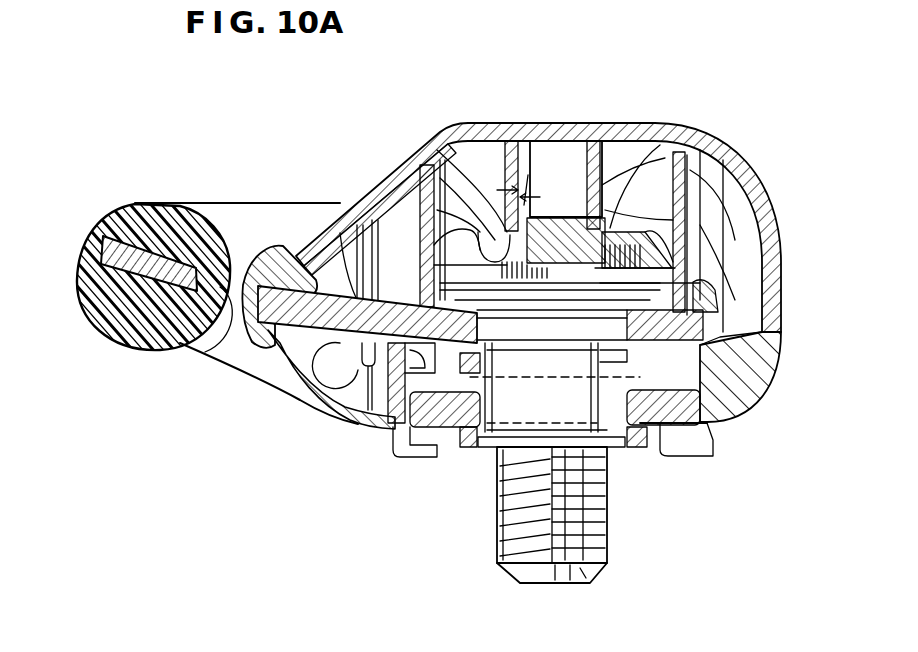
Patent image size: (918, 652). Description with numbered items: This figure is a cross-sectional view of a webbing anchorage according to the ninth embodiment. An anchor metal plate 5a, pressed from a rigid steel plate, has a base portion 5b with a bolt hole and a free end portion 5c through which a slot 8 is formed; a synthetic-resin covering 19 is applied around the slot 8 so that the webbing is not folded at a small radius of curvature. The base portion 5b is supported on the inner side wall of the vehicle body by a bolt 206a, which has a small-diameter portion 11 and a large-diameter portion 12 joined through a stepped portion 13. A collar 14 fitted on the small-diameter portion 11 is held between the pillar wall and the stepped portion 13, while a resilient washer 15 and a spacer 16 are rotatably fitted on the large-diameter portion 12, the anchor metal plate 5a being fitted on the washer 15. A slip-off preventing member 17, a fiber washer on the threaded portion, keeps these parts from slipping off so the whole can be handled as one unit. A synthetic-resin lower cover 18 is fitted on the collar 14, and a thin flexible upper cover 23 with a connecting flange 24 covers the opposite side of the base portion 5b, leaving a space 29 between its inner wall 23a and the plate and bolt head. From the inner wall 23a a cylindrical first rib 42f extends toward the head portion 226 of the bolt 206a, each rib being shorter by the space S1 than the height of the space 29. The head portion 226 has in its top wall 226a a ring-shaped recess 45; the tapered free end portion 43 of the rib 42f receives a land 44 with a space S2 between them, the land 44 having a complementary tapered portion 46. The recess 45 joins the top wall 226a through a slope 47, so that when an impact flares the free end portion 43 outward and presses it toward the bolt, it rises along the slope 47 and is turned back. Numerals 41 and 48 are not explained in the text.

The upper cover 23 is at (642, 124).
The inner wall of the upper cover 23a is at (705, 146).
The connecting flange 24 is at (785, 319).
The lower cover 18 is at (770, 400).
The space 29 is at (707, 213).
The recess 45 is at (679, 200).
The land 44 is at (590, 212).
The tapered free end portion 43 is at (456, 210).
The first rib 42f is at (471, 148).
The passage 48 is at (420, 225).
The slope 47 is at (400, 205).
The top wall 226a is at (395, 185).
The head portion 226 is at (700, 276).
The space S1 is at (405, 232).
The space S2 is at (528, 212).
The nut 41 is at (552, 218).
The tapered portion 46 is at (652, 212).
The covering 19 is at (93, 288).
The free end portion 5c is at (124, 280).
The large-diameter portion 12 is at (322, 222).
The slot 8 is at (205, 345).
The anchor metal plate 5a is at (316, 395).
The spacer 16 is at (448, 440).
The washer 15 is at (413, 457).
The stepped portion 13 is at (454, 380).
The collar 14 is at (490, 447).
The slip-off preventing member 17 is at (613, 450).
The base portion 5b is at (645, 437).
The small-diameter portion 11 is at (500, 537).
The bolt 206a is at (567, 583).